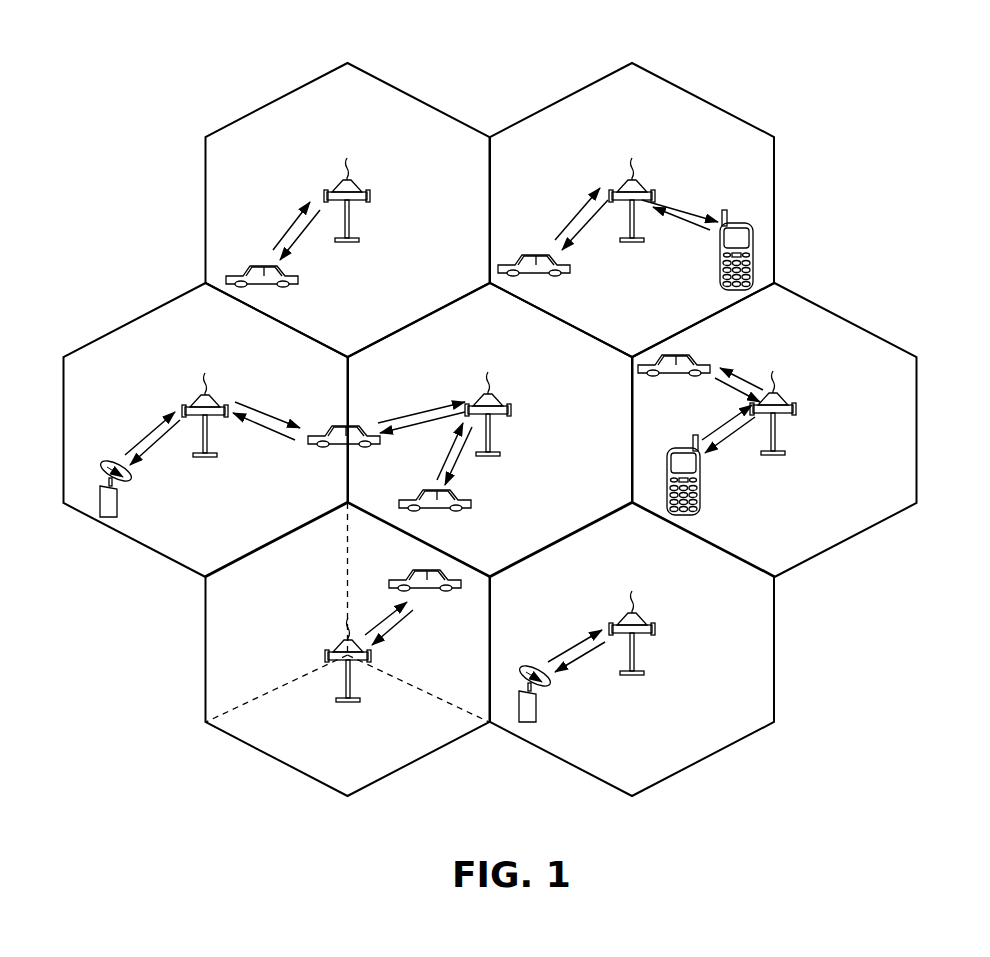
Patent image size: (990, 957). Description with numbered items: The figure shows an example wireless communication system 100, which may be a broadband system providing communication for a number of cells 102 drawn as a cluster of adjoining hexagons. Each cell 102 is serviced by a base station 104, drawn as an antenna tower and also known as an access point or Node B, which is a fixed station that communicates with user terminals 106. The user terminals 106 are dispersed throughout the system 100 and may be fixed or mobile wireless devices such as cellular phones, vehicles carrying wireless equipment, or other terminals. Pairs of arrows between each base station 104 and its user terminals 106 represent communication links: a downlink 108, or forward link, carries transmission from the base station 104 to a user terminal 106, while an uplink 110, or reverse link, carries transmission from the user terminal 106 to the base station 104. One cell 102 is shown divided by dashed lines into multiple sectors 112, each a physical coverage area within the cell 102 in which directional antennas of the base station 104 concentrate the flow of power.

The wireless communication system 100 is at (890, 156).
The cell 102 is at (285, 95).
The base station 104 is at (331, 650).
The user terminal 106 is at (298, 284).
The downlink 108 is at (298, 245).
The uplink 110 is at (290, 227).
The sector 112 is at (398, 753).